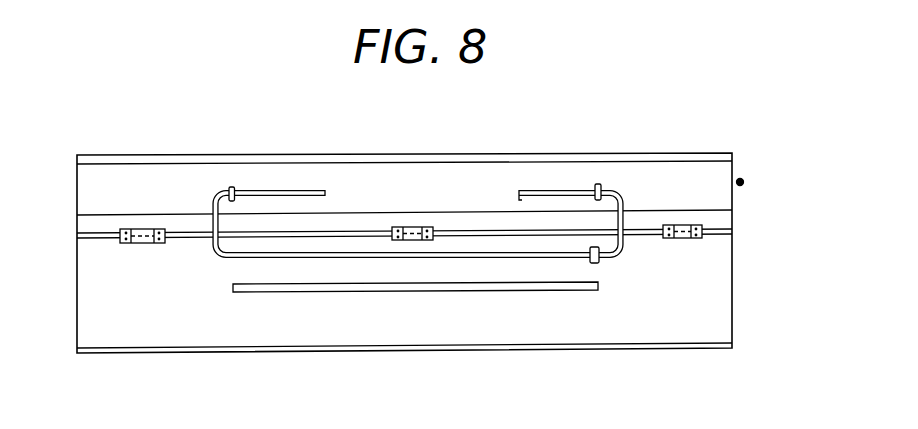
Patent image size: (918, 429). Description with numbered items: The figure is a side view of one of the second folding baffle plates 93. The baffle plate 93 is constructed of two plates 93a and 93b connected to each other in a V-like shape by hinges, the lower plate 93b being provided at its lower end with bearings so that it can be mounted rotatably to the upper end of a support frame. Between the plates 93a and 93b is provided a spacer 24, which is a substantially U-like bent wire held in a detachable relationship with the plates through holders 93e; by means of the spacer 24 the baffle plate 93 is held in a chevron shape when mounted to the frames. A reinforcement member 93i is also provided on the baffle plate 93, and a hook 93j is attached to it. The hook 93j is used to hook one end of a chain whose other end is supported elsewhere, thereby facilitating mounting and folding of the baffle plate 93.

The second folding baffle plate 93 is at (443, 146).
The plate 93a is at (371, 178).
The lower plate 93b is at (365, 327).
The holder 93e is at (599, 184).
The reinforcement member 93i is at (475, 283).
The hook 93j is at (741, 178).
The spacer 24 is at (537, 188).